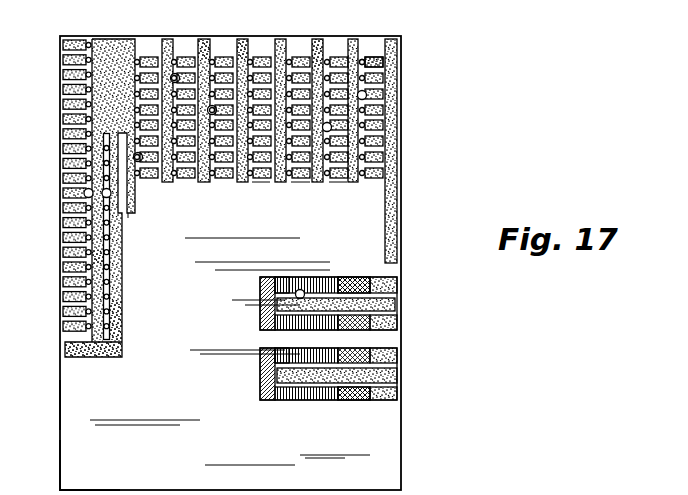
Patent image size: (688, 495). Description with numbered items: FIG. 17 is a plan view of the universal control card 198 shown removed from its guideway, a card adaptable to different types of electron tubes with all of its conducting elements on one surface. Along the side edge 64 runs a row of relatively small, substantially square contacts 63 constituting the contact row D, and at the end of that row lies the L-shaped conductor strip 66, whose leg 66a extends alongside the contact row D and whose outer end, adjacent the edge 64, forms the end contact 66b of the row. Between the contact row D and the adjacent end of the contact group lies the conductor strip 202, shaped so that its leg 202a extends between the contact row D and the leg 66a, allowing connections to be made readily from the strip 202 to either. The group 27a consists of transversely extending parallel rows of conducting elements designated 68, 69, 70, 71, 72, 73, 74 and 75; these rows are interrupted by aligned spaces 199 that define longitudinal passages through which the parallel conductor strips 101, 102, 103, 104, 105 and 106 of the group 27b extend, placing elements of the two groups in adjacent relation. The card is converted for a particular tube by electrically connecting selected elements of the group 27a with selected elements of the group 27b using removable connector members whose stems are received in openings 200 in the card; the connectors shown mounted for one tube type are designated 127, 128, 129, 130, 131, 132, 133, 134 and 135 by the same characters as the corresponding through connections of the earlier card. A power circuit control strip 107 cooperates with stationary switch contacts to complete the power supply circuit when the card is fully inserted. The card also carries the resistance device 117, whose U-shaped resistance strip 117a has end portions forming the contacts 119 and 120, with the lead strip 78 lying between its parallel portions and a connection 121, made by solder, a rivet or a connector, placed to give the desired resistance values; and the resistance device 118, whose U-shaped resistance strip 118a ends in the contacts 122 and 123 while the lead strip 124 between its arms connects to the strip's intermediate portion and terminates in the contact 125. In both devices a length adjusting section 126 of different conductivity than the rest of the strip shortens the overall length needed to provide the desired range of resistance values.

The conductor strip 202 is at (128, 30).
The leg of conductor strip 202a is at (100, 258).
The via 130 is at (176, 76).
The group of conducting elements 27b is at (203, 40).
The via 131 is at (212, 106).
The openings 200 is at (326, 53).
The interruptions 199 is at (363, 56).
The group of conducting elements 27a is at (376, 58).
The conductor strip 68 is at (384, 60).
The conductor strip 69 is at (384, 76).
The contact pad 135 is at (384, 90).
The conductor strip 70 is at (367, 96).
The conductor strip 71 is at (384, 110).
The conductor strip 72 is at (384, 125).
The conductor strip 73 is at (384, 141).
The conductor strip 74 is at (384, 157).
The conductor strip 75 is at (384, 173).
The power circuit control strip 107 is at (398, 191).
The via 129 is at (136, 154).
The via 127 is at (84, 195).
The via 128 is at (145, 212).
The conductor strip 101 is at (168, 183).
The conductor strip 102 is at (205, 183).
The conductor strip 103 is at (243, 183).
The conductor strip 104 is at (260, 183).
The conductor strip 105 is at (315, 183).
The conductor strip 106 is at (353, 183).
The conductor 132 is at (253, 184).
The conductor 133 is at (302, 184).
The conductor 134 is at (338, 184).
The contact row D is at (58, 262).
The contacts 63 is at (60, 268).
The L-shaped conducting strip 66 is at (118, 326).
The leg portion 66a is at (116, 281).
The end contact 66b is at (96, 346).
The side edge 64 is at (58, 405).
The control card 198 is at (76, 462).
The resistance device 117 is at (313, 278).
The resistance strip 117a is at (283, 278).
The connection 121 is at (300, 289).
The length adjusting section 126 is at (353, 278).
The contact 119 is at (398, 286).
The contact 120 is at (398, 323).
The lead strip 78 is at (268, 306).
The resistance device 118 is at (284, 402).
The resistance strip 118a is at (285, 349).
The contact 122 is at (398, 353).
The contact 125 is at (398, 371).
The contact 123 is at (398, 389).
The lead strip 124 is at (273, 380).